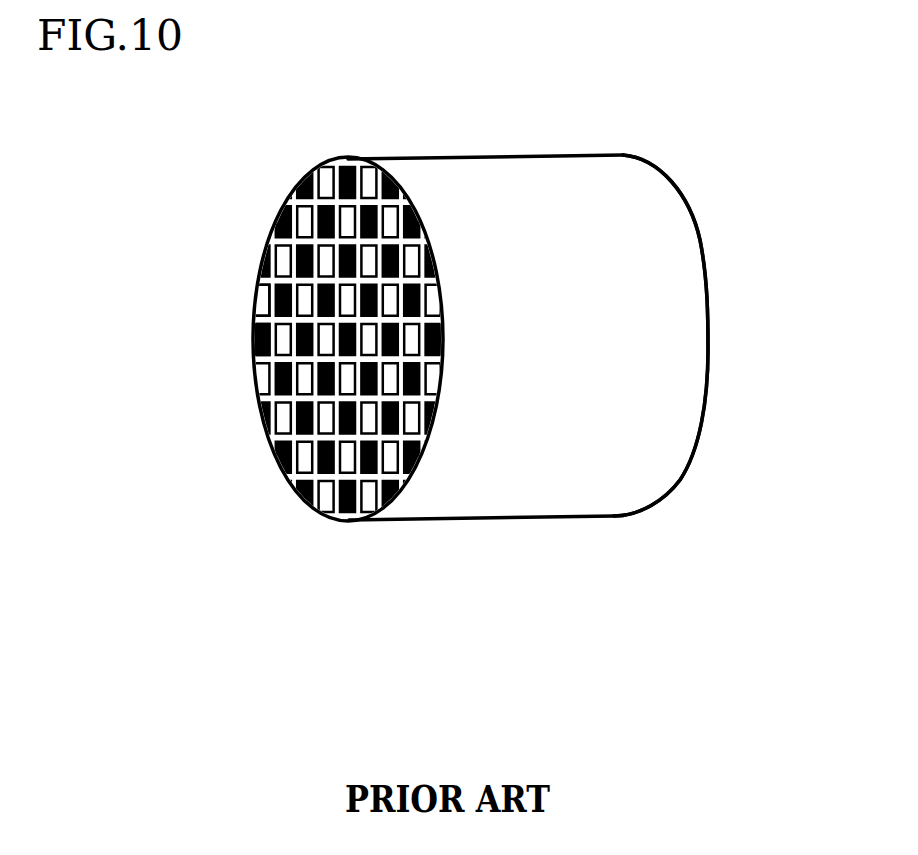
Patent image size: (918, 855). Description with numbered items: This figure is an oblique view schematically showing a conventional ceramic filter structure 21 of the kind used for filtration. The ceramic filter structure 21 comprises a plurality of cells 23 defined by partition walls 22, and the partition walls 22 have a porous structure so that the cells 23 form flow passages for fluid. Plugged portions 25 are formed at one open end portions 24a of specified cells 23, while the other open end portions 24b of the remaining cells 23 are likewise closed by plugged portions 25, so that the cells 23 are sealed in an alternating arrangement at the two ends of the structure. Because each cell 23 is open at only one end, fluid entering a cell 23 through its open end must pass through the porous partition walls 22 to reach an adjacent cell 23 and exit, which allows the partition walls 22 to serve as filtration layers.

The ceramic filter structure 21 is at (561, 192).
The partition walls 22 is at (305, 242).
The cells 23 is at (261, 308).
The one open end portions 24a is at (290, 493).
The other open end portions 24b is at (672, 488).
The plugged portions 25 is at (259, 353).